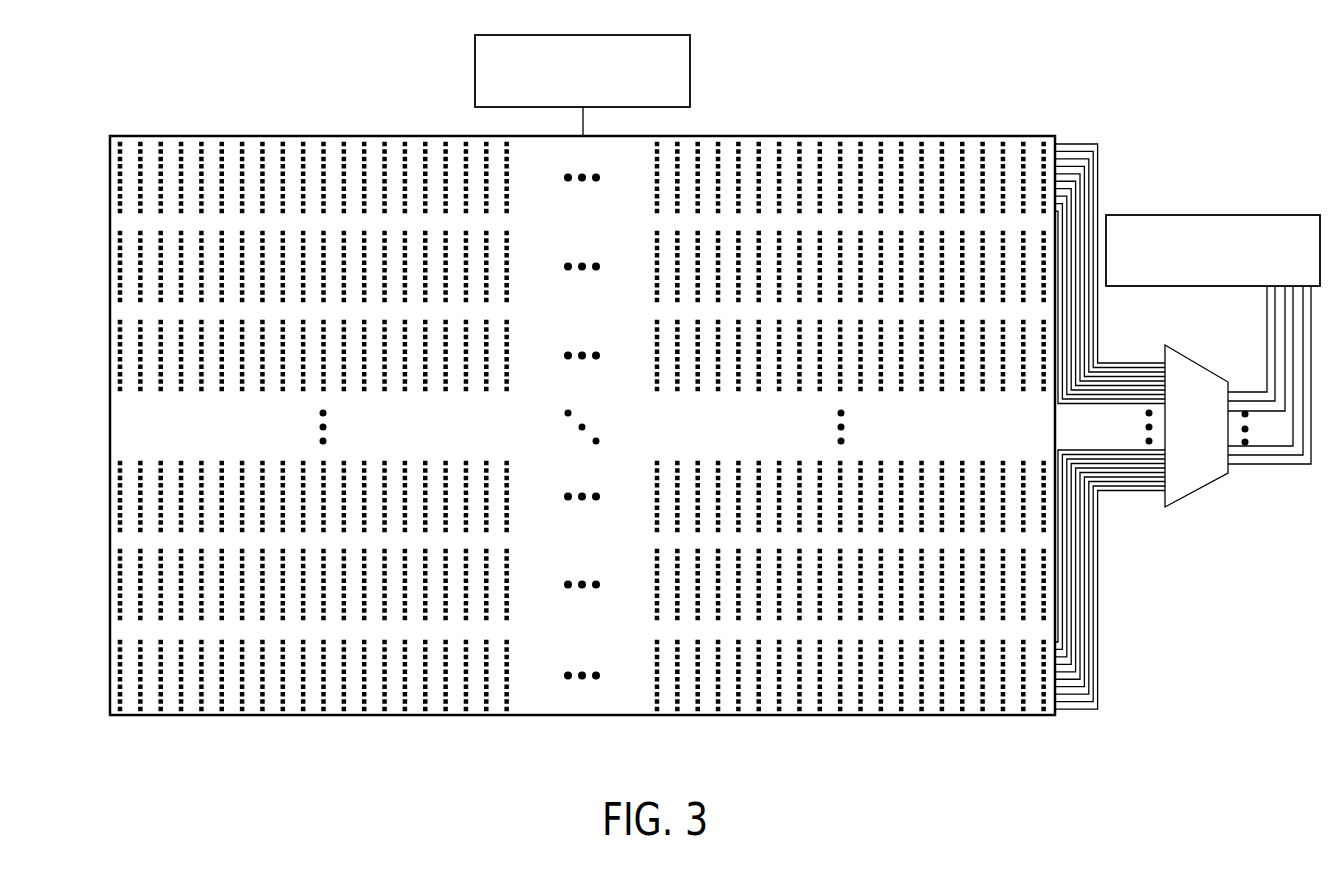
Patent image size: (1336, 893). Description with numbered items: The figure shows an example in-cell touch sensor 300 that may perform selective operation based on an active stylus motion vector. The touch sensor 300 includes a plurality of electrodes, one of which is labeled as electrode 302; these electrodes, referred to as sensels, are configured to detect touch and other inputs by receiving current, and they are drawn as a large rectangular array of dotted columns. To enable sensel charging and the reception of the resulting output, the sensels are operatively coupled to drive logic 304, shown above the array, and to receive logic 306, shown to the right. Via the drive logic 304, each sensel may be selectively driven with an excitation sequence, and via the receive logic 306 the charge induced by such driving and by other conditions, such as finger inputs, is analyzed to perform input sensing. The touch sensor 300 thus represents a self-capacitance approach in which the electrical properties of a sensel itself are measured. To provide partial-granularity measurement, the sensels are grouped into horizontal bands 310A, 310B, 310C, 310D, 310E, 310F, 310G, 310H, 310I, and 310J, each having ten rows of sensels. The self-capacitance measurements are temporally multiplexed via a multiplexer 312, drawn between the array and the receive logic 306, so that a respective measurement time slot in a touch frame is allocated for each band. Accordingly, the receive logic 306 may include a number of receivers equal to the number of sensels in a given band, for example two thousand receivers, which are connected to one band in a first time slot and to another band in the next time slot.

The in-cell touch sensor 300 is at (837, 86).
The electrode 302 is at (221, 136).
The drive logic 304 is at (663, 83).
The receive logic 306 is at (1307, 262).
The multiplexer 312 is at (1213, 452).
The horizontal band 310A is at (110, 143).
The horizontal band 310B is at (110, 232).
The horizontal band 310C is at (110, 321).
The horizontal band 310D is at (117, 405).
The horizontal band 310E is at (117, 410).
The horizontal band 310F is at (117, 428).
The horizontal band 310G is at (117, 446).
The horizontal band 310H is at (110, 463).
The horizontal band 310I is at (110, 551).
The horizontal band 310J is at (110, 642).